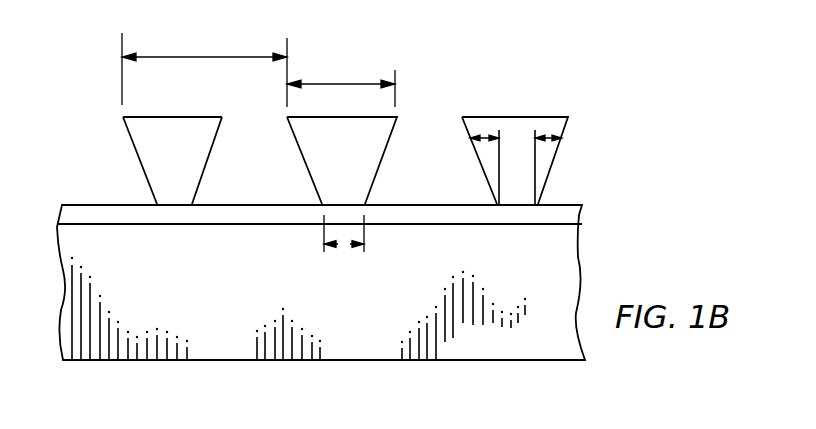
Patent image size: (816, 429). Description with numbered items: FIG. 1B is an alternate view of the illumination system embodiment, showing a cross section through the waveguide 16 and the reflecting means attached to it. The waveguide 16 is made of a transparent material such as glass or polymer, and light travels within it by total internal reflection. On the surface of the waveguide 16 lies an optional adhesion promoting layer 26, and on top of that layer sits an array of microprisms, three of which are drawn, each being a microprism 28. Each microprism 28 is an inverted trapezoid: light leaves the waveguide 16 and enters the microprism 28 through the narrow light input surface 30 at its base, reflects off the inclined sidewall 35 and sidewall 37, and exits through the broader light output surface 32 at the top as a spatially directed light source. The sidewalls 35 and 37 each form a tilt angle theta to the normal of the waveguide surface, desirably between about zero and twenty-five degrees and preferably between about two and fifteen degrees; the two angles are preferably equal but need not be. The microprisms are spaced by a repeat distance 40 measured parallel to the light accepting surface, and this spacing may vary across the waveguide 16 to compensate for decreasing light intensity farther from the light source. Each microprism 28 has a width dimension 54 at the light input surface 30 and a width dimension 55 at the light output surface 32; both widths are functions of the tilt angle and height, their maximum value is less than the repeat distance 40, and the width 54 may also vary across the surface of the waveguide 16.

The waveguide 16 is at (578, 259).
The adhesion promoting layer 26 is at (578, 215).
The microprism 28 is at (538, 90).
The light input surface 30 is at (172, 204).
The light output surface 32 is at (199, 118).
The sidewall 35 is at (134, 152).
The sidewall 37 is at (203, 172).
The repeat distance 40 is at (198, 55).
The width dimension 54 is at (340, 245).
The width dimension 55 is at (338, 82).